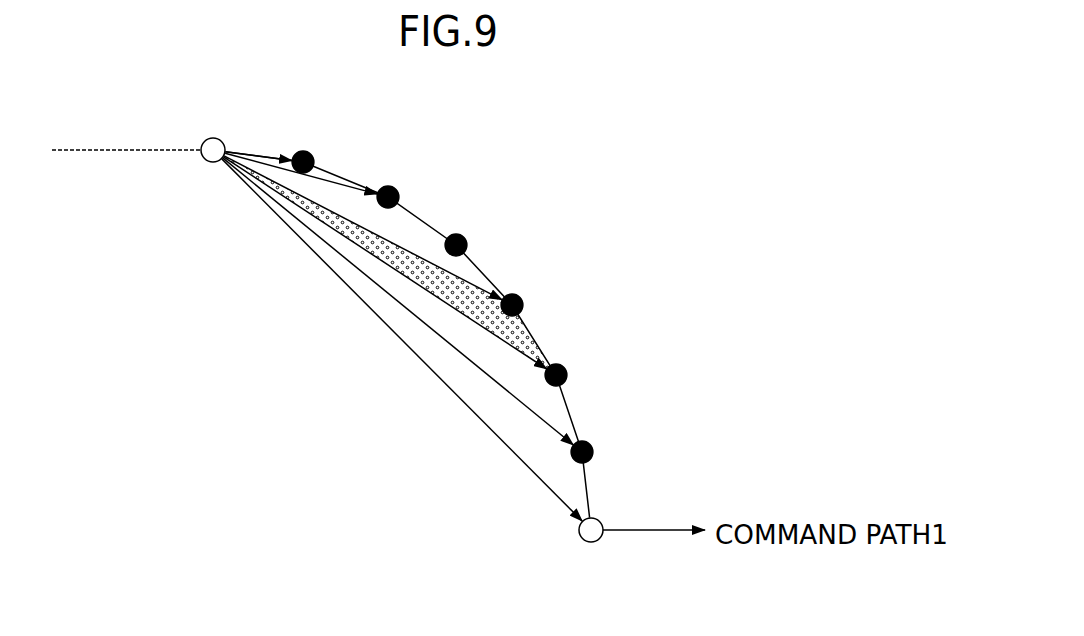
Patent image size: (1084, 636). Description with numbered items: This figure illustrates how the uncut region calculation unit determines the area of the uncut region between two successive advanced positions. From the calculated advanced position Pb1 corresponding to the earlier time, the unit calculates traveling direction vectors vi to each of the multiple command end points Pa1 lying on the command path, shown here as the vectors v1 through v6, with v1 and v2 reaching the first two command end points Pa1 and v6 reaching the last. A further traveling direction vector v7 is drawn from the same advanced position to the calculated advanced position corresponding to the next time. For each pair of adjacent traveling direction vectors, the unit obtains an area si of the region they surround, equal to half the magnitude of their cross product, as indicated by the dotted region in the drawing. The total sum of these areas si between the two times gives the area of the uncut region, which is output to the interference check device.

The traveling direction vector v1 is at (258, 148).
The traveling direction vector v2 is at (335, 180).
The command end point Pa1 is at (447, 237).
The traveling direction vector vi is at (470, 284).
The area si is at (530, 328).
The traveling direction vector v6 is at (450, 332).
The traveling direction vector v7 is at (487, 440).